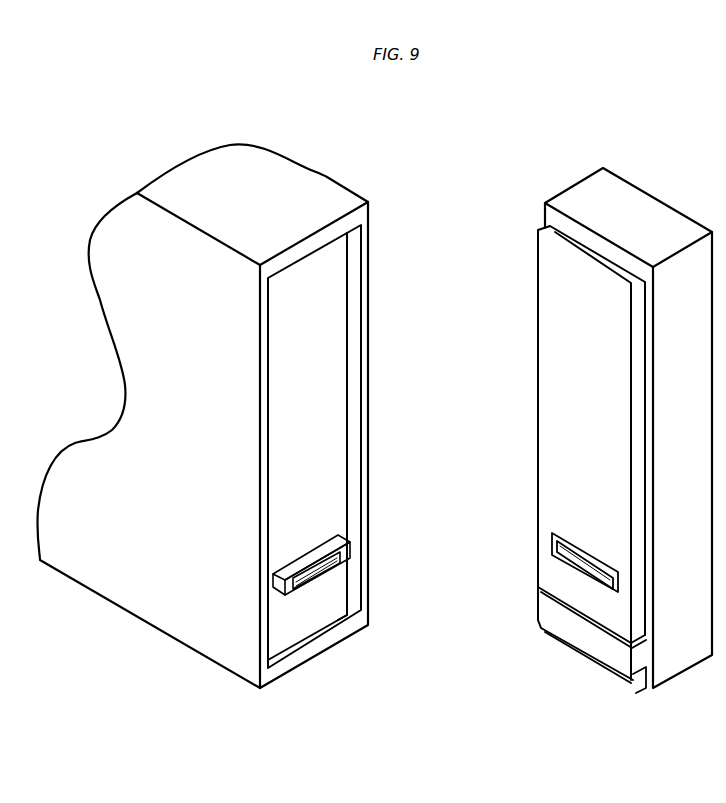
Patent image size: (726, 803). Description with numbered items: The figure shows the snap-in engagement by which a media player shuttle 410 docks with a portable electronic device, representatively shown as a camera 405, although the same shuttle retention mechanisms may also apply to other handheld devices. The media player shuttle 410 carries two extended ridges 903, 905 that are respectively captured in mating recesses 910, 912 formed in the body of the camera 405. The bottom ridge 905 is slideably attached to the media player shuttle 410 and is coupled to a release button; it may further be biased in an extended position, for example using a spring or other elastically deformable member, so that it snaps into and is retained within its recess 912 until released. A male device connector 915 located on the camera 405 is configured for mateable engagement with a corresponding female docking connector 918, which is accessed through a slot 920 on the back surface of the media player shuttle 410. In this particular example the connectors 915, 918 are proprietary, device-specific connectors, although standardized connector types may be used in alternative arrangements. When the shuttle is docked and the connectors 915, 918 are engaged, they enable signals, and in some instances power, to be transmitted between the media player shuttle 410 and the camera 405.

The camera 405 is at (323, 176).
The media player shuttle 410 is at (660, 200).
The extended ridge 903 is at (547, 237).
The bottom ridge 905 is at (635, 673).
The mating recess 910 is at (323, 262).
The mating recess 912 is at (352, 613).
The male device connector 915 is at (310, 548).
The female docking connector 918 is at (570, 552).
The slot 920 is at (560, 557).